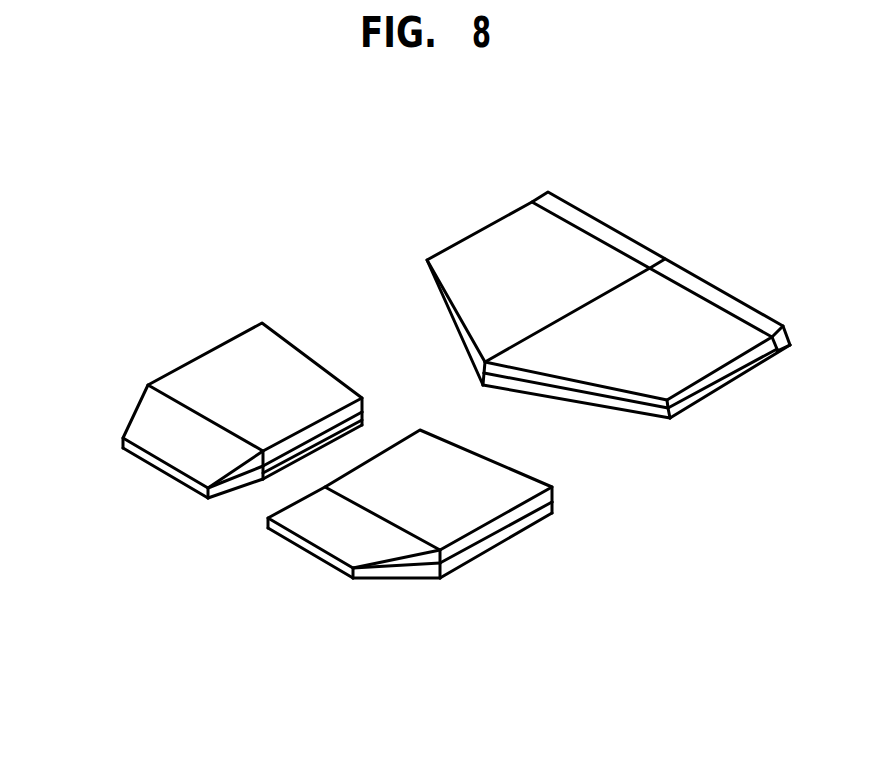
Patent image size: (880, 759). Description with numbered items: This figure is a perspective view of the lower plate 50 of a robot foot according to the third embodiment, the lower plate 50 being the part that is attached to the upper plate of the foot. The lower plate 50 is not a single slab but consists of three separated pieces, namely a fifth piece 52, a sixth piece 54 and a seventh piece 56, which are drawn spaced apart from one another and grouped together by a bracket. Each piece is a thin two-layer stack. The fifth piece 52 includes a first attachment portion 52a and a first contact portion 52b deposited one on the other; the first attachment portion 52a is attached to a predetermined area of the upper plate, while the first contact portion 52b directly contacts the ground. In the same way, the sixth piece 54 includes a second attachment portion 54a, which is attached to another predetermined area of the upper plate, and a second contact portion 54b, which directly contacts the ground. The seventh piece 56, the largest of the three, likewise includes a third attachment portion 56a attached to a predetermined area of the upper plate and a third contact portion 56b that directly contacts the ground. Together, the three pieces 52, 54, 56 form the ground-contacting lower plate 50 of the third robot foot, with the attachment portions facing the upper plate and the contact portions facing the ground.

The lower plate 50 is at (478, 650).
The fifth piece 52 is at (112, 408).
The first attachment portion 52a is at (205, 353).
The first contact portion 52b is at (279, 466).
The sixth piece 54 is at (418, 406).
The second attachment portion 54a is at (517, 470).
The second contact portion 54b is at (498, 540).
The seventh piece 56 is at (636, 192).
The third attachment portion 56a is at (665, 377).
The third contact portion 56b is at (750, 367).